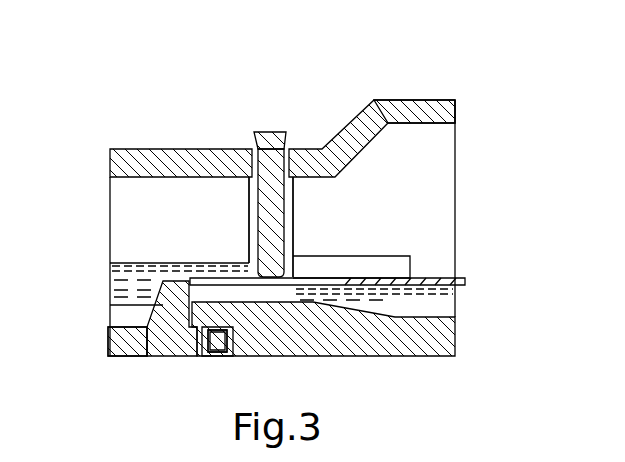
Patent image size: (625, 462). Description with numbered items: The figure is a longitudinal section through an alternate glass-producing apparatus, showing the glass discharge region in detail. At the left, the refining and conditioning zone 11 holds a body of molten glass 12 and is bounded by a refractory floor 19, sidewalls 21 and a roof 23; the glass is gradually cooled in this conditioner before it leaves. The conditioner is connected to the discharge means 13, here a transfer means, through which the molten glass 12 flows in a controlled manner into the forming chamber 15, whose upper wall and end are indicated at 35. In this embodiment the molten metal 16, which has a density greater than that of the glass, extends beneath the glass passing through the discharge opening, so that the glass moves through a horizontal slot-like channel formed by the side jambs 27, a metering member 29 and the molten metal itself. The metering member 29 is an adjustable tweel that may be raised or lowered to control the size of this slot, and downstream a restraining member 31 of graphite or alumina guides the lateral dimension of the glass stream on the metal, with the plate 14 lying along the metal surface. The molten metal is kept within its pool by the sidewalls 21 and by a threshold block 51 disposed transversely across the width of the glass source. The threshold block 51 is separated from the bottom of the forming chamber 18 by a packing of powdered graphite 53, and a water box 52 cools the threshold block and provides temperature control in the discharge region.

The refining and conditioning zone 11 is at (187, 142).
The molten glass 12 is at (110, 297).
The discharge means 13 is at (290, 130).
The plate 14 is at (465, 281).
The forming chamber 15 is at (424, 87).
The molten metal 16 is at (455, 300).
The bottom of the forming chamber 18 is at (405, 355).
The refractory floor 19 is at (110, 343).
The sidewalls 21 is at (170, 219).
The roof 23 is at (110, 162).
The side jamb 27 is at (250, 198).
The metering member 29 is at (288, 207).
The restraining member 31 is at (388, 257).
The right wall 35 is at (457, 110).
The threshold block 51 is at (172, 347).
The water box 52 is at (220, 356).
The powdered graphite 53 is at (200, 356).